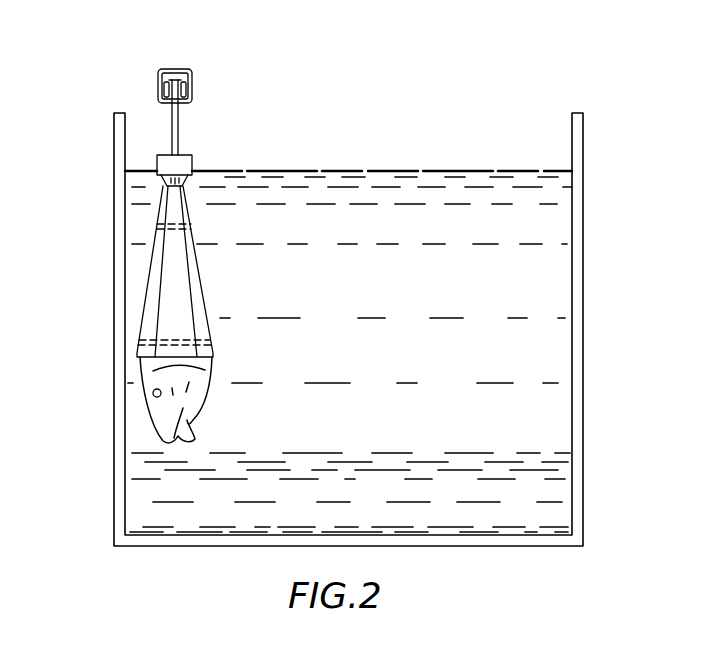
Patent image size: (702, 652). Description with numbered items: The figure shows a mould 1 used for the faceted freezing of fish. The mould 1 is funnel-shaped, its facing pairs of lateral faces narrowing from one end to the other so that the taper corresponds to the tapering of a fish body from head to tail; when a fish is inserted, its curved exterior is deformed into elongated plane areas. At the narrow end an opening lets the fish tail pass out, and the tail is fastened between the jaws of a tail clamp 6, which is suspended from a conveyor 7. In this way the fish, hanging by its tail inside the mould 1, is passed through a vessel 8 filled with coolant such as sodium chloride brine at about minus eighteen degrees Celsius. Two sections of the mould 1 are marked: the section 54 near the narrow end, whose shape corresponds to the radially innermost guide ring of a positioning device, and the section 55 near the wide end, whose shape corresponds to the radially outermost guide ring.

The mould 1 is at (182, 295).
The tail clamp 6 is at (180, 162).
The conveyor 7 is at (178, 70).
The vessel 8 is at (118, 214).
The mould section 54 is at (182, 234).
The mould section 55 is at (183, 341).